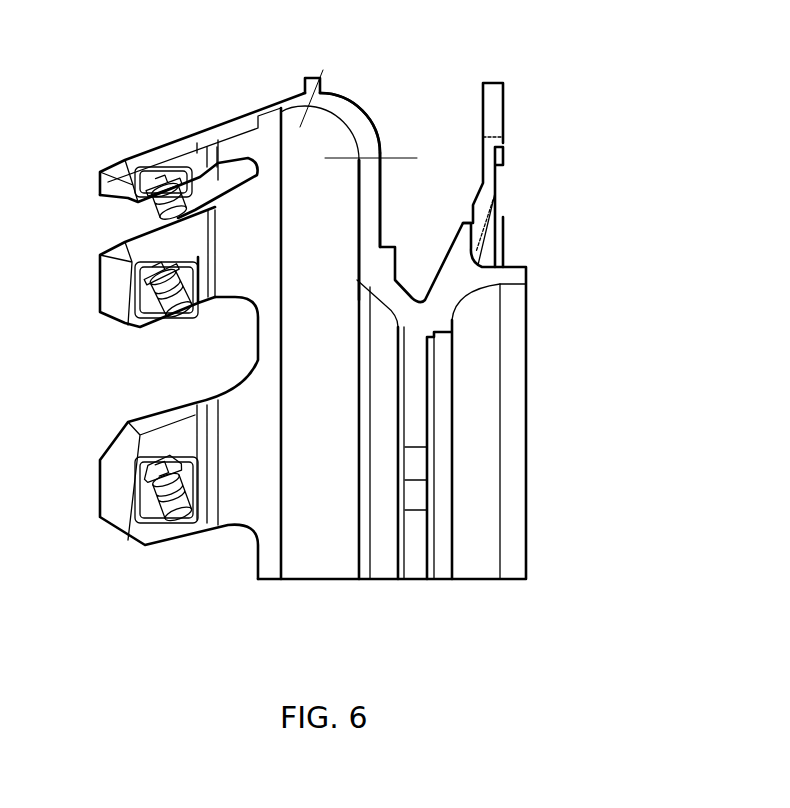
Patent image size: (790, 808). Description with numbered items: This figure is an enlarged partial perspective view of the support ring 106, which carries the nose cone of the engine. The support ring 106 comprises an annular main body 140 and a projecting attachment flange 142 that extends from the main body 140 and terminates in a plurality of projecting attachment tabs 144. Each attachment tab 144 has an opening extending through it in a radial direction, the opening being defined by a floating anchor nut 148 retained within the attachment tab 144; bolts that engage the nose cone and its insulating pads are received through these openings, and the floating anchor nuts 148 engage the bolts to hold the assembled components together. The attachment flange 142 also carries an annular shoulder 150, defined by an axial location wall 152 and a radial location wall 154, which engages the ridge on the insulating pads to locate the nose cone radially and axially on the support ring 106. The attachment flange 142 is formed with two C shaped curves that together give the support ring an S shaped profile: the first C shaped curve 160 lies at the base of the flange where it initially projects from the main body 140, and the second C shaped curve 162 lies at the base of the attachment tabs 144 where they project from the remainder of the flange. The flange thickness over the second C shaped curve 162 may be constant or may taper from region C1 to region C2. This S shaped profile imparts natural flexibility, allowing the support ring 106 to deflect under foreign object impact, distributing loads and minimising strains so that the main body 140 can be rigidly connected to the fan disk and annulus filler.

The support ring 106 is at (612, 497).
The annular main body 140 is at (458, 280).
The projecting attachment flange 142 is at (373, 185).
The projecting attachment tab 144 is at (163, 152).
The floating anchor nut 148 is at (182, 302).
The annular shoulder 150 is at (322, 78).
The axial location wall 152 is at (304, 86).
The radial location wall 154 is at (292, 97).
The first C shaped curve 160 is at (385, 298).
The second C shaped curve 162 is at (362, 124).
The region C1 is at (388, 161).
The region C2 is at (335, 89).